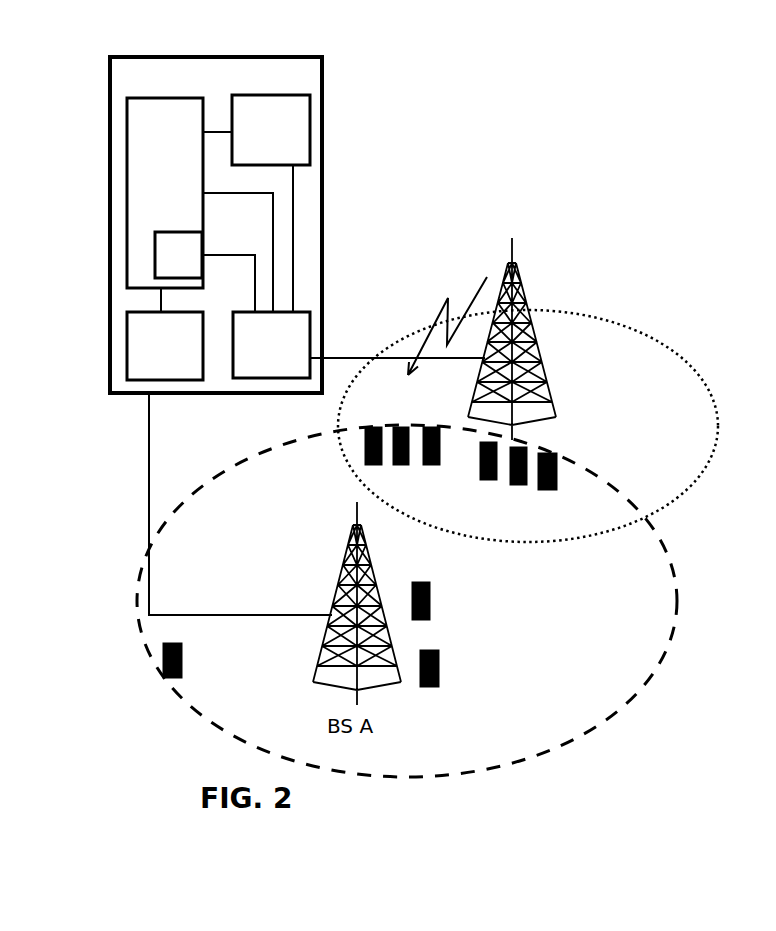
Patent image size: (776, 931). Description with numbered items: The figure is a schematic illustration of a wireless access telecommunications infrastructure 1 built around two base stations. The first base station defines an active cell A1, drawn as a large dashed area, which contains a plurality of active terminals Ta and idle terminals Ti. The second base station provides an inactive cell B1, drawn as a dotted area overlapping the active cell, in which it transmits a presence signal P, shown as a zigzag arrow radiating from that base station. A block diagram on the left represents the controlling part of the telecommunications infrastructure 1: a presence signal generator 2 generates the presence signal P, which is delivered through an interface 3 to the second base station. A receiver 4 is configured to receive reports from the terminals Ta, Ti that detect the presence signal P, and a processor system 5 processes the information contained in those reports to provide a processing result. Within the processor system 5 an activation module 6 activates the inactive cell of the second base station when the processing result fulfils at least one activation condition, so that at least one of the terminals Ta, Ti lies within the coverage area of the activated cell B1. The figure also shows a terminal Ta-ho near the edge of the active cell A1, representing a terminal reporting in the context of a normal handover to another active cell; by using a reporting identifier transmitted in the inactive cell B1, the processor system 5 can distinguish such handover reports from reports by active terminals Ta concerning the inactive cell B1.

The telecommunications infrastructure 1 is at (512, 185).
The presence signal generator 2 is at (271, 130).
The interface 3 is at (271, 345).
The receiver 4 is at (165, 346).
The processor system 5 is at (165, 193).
The activation module 6 is at (178, 255).
The presence signal P is at (447, 326).
The active cell A1 is at (407, 601).
The inactive cell B1 is at (528, 426).
The idle terminals Ti is at (410, 523).
The active terminals Ta is at (488, 564).
The handover terminals Ta-ho is at (201, 660).